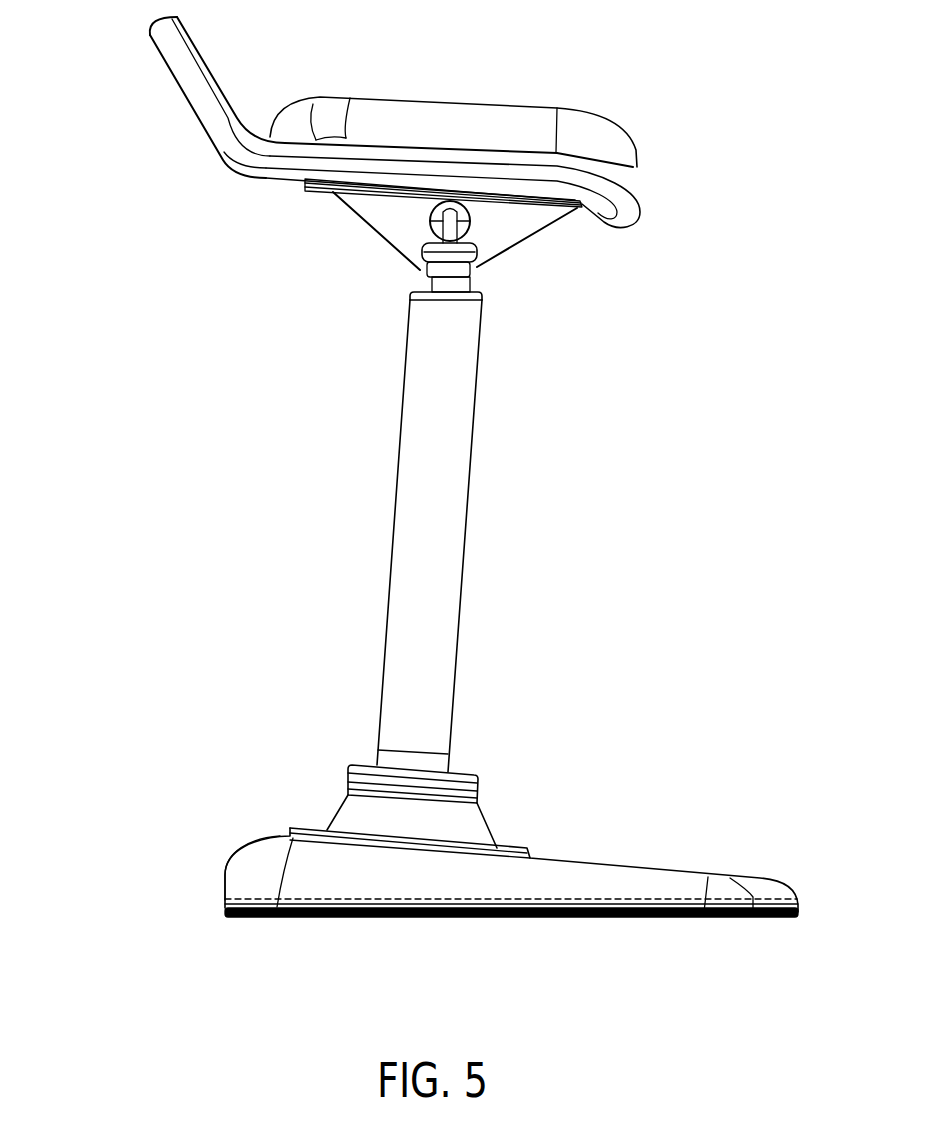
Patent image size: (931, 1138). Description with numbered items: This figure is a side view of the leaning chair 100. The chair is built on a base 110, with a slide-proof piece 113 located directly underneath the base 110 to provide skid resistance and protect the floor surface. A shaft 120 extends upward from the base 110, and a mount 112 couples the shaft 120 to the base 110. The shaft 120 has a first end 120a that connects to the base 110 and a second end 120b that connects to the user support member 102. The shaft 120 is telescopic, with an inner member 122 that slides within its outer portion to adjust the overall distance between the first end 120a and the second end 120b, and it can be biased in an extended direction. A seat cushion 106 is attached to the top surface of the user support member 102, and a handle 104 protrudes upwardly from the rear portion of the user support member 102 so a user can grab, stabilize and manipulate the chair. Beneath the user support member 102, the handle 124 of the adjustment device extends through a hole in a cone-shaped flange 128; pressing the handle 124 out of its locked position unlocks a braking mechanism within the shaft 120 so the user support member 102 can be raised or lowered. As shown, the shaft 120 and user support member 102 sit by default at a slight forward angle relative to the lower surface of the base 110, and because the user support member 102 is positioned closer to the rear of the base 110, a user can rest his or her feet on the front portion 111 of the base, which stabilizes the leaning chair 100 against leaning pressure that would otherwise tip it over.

The leaning chair 100 is at (240, 471).
The user support member 102 is at (582, 203).
The handle 104 is at (148, 117).
The seat cushion 106 is at (487, 120).
The base 110 is at (267, 852).
The front portion of the base 111 is at (788, 849).
The mount 112 is at (473, 818).
The slide-proof piece 113 is at (182, 814).
The shaft 120 is at (457, 478).
The first end of the shaft 120a is at (480, 754).
The second end of the shaft 120b is at (505, 323).
The inner member 122 is at (467, 288).
The handle of the adjustment device 124 is at (423, 265).
The cone-shaped flange 128 is at (390, 220).